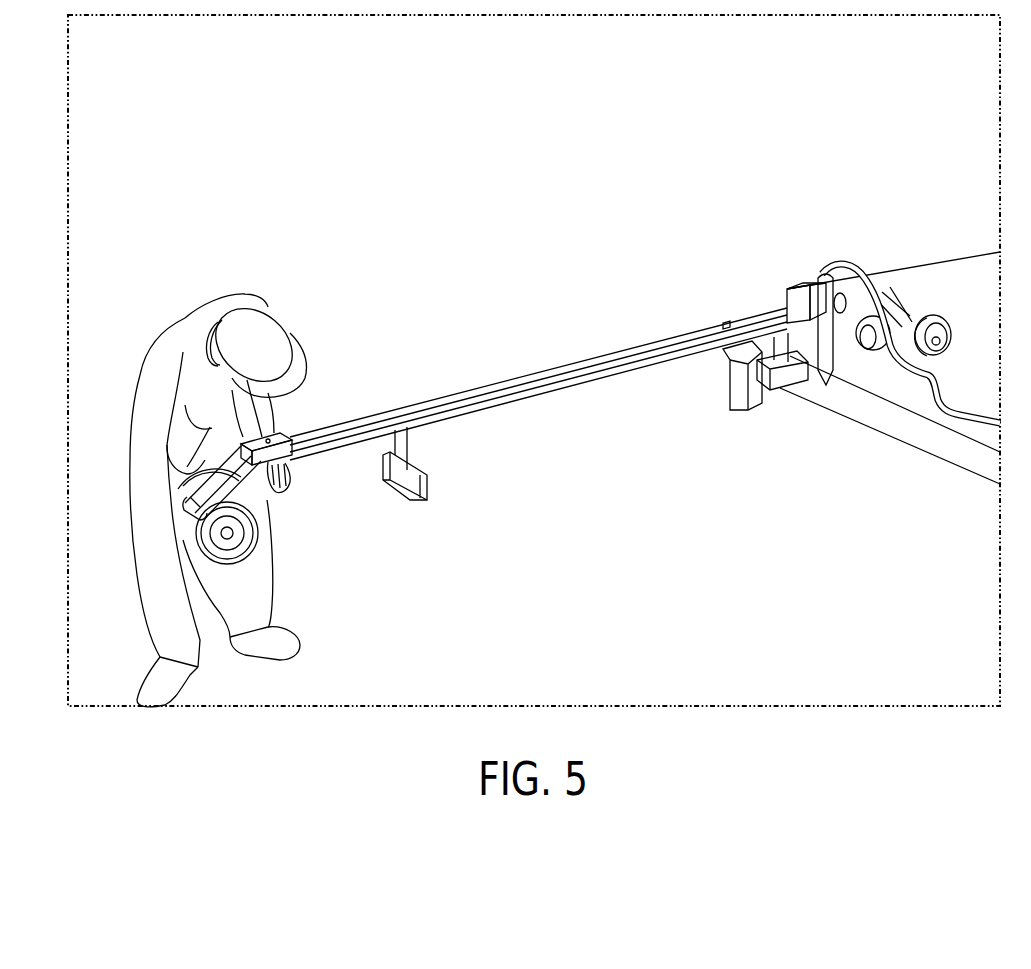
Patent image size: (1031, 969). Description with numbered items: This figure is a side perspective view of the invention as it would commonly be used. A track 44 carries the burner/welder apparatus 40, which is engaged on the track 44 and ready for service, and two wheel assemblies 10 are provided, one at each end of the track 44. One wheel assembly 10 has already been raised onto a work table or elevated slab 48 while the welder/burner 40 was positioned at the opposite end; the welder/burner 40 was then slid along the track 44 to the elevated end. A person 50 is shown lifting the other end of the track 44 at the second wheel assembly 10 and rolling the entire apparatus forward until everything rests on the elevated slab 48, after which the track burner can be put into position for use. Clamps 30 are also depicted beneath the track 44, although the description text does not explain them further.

The wheel assembly 10 is at (311, 485).
The clamp 30 is at (417, 481).
The burner/welder apparatus 40 is at (797, 289).
The track 44 is at (466, 397).
The work table or elevated slab 48 is at (927, 430).
The person 50 is at (182, 352).